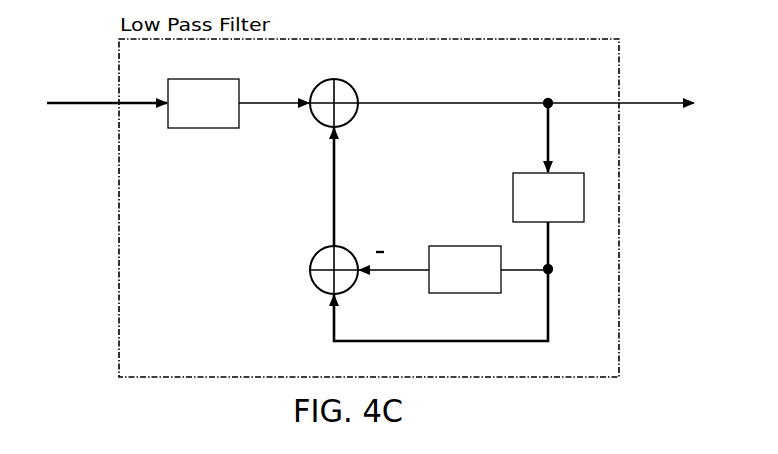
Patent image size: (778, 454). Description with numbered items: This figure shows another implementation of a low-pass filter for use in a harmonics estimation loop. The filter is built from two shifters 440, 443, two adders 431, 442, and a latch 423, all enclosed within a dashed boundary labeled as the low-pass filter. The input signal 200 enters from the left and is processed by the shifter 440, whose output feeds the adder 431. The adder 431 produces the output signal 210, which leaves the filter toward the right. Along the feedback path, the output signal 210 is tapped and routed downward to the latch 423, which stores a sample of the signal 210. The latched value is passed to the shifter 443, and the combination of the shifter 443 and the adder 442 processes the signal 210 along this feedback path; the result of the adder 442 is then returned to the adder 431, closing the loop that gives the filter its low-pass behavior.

The signal 200 is at (107, 93).
The signal 210 is at (526, 94).
The shifter 440 is at (203, 93).
The adder 431 is at (334, 91).
The latch 423 is at (542, 162).
The adder 442 is at (319, 211).
The shifter 443 is at (465, 257).